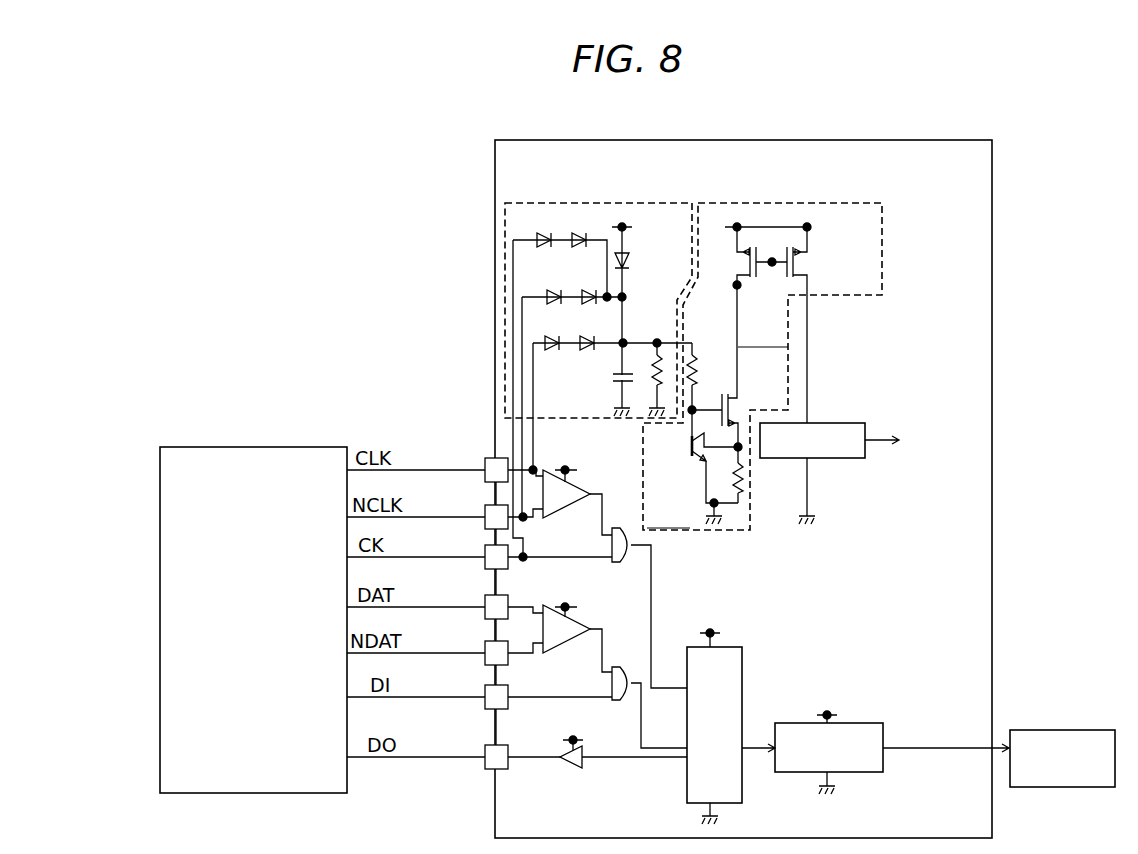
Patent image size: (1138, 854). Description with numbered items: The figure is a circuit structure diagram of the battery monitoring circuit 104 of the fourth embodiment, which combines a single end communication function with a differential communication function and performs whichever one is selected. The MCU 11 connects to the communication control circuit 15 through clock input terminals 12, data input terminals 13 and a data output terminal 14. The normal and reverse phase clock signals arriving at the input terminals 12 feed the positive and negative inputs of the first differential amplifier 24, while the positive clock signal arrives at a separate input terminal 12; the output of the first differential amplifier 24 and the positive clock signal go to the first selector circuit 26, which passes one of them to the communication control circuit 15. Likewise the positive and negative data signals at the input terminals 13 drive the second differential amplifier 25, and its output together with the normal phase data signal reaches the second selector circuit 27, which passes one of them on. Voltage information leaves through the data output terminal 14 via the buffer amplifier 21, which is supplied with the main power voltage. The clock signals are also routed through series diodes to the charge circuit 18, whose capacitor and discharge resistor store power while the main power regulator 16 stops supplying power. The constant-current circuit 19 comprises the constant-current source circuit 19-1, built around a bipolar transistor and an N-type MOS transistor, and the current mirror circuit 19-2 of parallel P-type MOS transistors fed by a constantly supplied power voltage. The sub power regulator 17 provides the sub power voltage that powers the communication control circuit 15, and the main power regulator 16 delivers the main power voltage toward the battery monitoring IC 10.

The battery monitoring IC 10 is at (1029, 729).
The MCU 11 is at (236, 447).
The clock input terminal 12 is at (485, 506).
The data input terminal 13 is at (483, 646).
The data output terminal 14 is at (490, 776).
The communication control circuit 15 is at (744, 707).
The main power regulator 16 is at (793, 723).
The sub power regulator 17 is at (823, 423).
The charge circuit 18 is at (572, 203).
The constant-current circuit 19 is at (789, 366).
The constant-current source circuit 19-1 is at (677, 494).
The current mirror circuit 19-2 is at (762, 302).
The buffer amplifier 21 is at (565, 756).
The first differential amplifier 24 is at (588, 495).
The second differential amplifier 25 is at (581, 632).
The first selector circuit 26 is at (626, 525).
The second selector circuit 27 is at (620, 670).
The battery monitoring circuit 104 is at (993, 199).